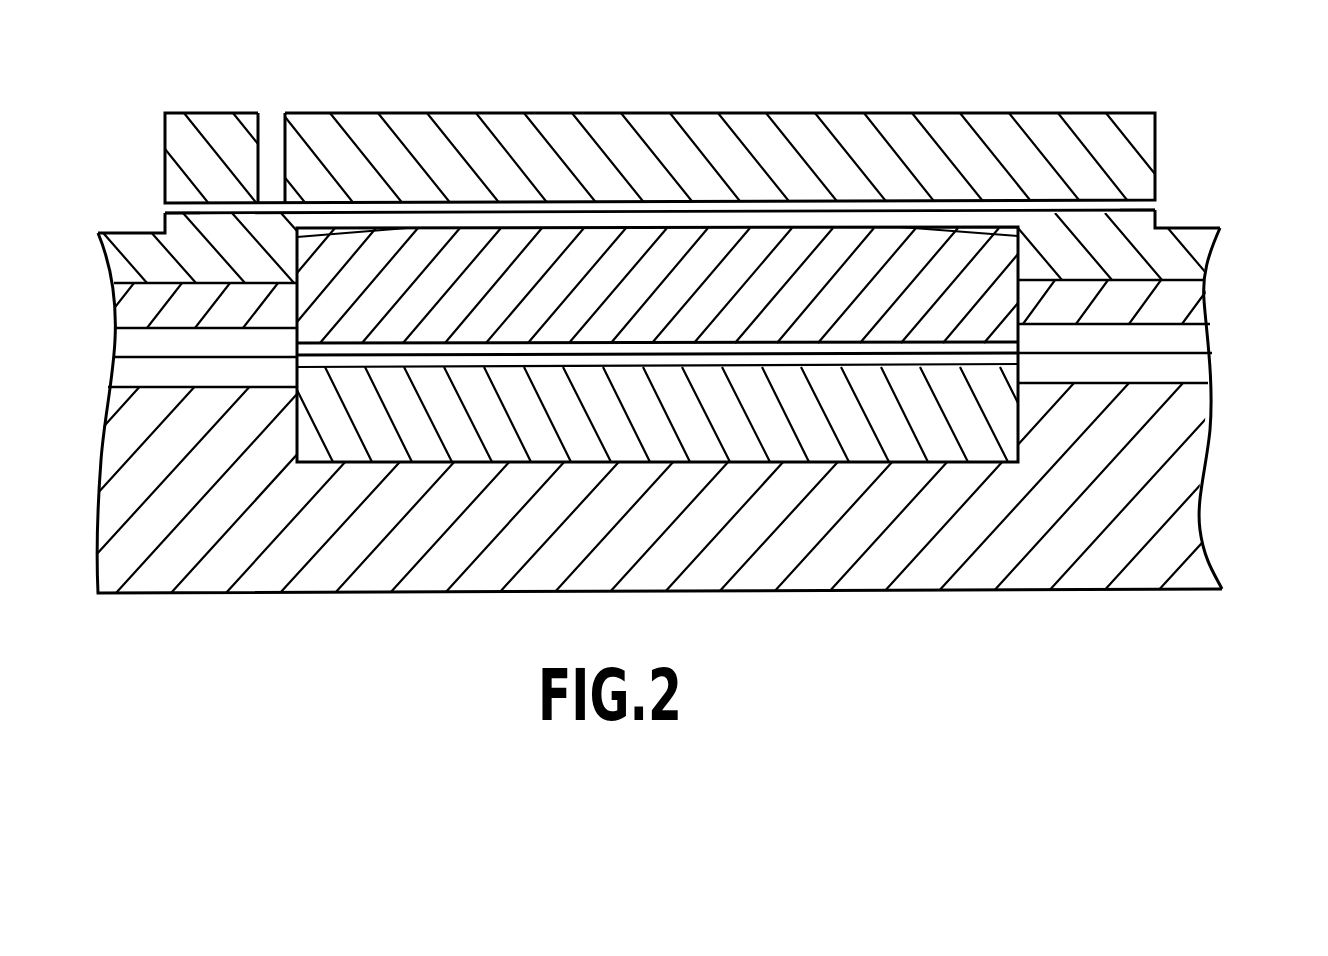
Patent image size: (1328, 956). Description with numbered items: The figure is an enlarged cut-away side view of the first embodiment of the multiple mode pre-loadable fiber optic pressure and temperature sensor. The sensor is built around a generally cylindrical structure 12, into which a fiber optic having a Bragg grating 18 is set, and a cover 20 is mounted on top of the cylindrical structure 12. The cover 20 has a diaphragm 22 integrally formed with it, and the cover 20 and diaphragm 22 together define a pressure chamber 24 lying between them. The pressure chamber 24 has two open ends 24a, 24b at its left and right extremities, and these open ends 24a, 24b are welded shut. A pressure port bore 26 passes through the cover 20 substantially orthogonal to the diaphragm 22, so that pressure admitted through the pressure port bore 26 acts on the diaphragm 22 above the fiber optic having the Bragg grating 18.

The generally cylindrical structure 12 is at (879, 591).
The fiber optic having a Bragg grating 18 is at (1190, 351).
The cover 20 is at (806, 128).
The diaphragm 22 is at (680, 222).
The pressure chamber 24 is at (932, 208).
The open end of pressure chamber 24a is at (1150, 209).
The open end of pressure chamber 24b is at (165, 213).
The pressure port bore 26 is at (273, 137).